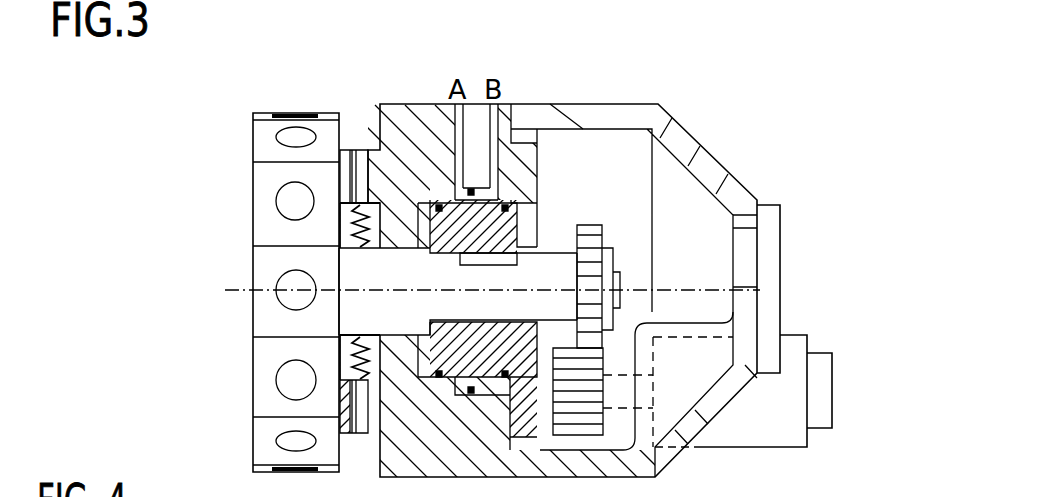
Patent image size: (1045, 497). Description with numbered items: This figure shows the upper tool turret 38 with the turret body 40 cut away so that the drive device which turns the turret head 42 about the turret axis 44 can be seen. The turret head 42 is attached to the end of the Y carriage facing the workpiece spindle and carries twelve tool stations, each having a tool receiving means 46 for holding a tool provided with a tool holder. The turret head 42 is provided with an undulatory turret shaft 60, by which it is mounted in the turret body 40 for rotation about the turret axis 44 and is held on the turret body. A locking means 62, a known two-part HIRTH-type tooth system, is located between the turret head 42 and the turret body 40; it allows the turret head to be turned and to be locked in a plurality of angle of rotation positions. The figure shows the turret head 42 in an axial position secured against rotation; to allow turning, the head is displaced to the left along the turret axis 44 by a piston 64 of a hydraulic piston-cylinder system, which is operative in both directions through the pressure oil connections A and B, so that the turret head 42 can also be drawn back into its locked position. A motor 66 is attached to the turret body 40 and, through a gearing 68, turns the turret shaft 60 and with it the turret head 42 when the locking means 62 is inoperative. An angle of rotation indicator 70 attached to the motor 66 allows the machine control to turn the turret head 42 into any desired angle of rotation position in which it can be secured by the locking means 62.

The upper tool turret 38 is at (650, 92).
The turret body 40 is at (545, 105).
The turret head 42 is at (260, 398).
The turret axis 44 is at (280, 292).
The tool receiving means 46 is at (278, 204).
The turret shaft 60 is at (348, 322).
The locking means 62 is at (355, 149).
The piston 64 is at (478, 362).
The motor 66 is at (790, 335).
The gearing 68 is at (624, 252).
The angle of rotation indicator 70 is at (822, 368).